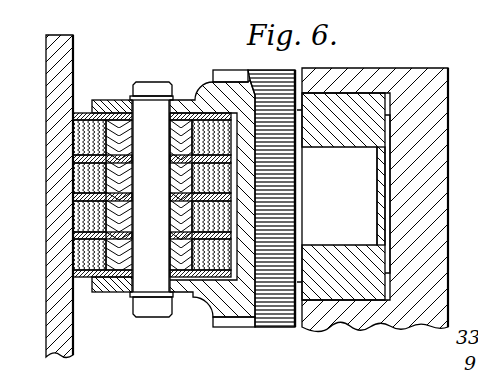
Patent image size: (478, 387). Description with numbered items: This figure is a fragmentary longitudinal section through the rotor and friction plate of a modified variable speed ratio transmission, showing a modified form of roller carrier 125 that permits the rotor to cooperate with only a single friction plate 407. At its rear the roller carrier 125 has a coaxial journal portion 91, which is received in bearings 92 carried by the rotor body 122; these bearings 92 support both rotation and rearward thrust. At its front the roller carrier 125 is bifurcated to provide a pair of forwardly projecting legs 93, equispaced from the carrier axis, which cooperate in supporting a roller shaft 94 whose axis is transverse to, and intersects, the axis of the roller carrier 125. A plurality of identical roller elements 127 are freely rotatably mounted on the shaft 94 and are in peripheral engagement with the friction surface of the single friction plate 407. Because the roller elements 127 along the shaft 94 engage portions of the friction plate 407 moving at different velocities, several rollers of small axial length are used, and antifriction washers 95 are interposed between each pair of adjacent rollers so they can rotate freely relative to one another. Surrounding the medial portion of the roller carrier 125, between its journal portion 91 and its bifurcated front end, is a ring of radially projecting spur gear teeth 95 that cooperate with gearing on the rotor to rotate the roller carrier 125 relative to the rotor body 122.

The friction plate 407 is at (73, 43).
The forwardly projecting legs 93 is at (103, 100).
The spur gear teeth / antifriction washers 95 is at (97, 117).
The roller elements 127 is at (74, 139).
The roller shaft 94 is at (158, 199).
The roller carrier 125 is at (193, 100).
The rotor body 122 is at (403, 80).
The journal portion 91 is at (330, 206).
The bearings 92 is at (350, 147).